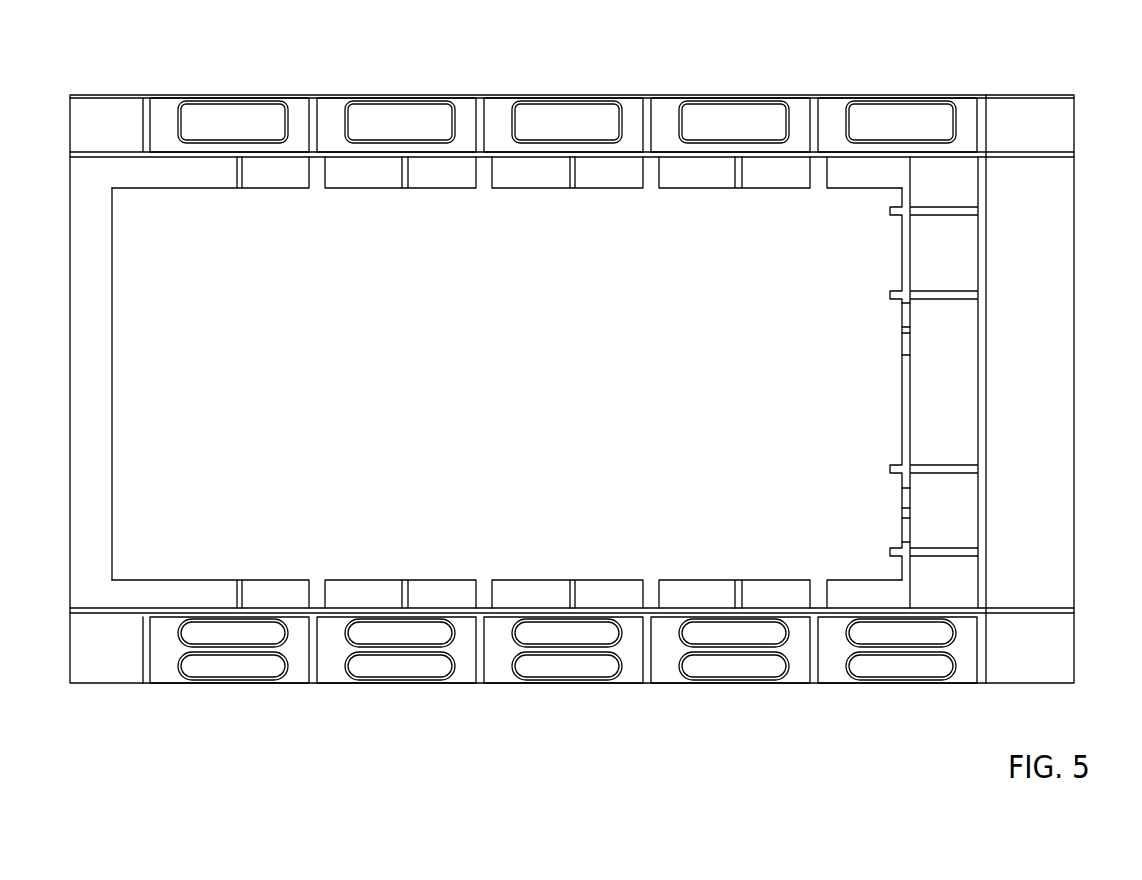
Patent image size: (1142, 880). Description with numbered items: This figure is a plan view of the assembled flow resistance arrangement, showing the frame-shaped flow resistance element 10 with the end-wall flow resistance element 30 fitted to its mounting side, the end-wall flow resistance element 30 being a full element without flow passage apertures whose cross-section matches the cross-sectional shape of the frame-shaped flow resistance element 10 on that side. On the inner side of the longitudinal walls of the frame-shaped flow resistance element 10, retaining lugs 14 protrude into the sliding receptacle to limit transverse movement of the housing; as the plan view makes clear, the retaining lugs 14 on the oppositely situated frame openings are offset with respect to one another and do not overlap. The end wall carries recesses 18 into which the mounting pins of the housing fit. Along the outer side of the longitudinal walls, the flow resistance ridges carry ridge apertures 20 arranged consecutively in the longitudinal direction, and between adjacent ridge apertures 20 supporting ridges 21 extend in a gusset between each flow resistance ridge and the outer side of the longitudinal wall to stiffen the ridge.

The frame-shaped flow resistance element 10 is at (886, 63).
The retaining lugs 14 is at (555, 167).
The recesses 18 is at (928, 331).
The ridge apertures 20 is at (249, 114).
The supporting ridges 21 is at (313, 110).
The end-wall flow resistance element 30 is at (1023, 76).